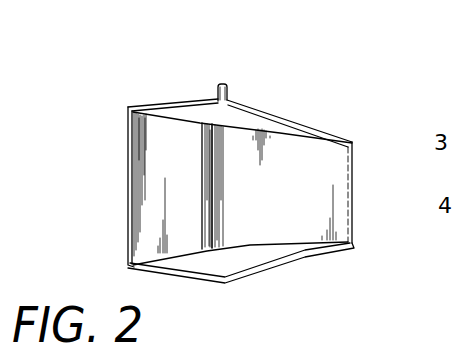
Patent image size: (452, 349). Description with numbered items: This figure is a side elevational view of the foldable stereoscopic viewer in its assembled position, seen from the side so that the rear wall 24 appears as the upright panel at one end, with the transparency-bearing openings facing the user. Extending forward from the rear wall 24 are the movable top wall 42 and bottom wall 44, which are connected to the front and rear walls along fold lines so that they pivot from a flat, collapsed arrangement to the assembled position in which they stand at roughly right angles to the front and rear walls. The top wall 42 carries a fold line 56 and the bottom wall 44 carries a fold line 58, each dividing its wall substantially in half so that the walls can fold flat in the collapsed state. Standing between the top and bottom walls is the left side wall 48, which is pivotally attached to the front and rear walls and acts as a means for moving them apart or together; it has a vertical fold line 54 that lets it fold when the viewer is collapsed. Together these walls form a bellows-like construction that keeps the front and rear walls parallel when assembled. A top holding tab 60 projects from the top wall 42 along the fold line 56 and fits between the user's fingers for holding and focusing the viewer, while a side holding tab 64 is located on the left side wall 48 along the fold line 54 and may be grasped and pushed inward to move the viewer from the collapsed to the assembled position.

The rear wall 24 is at (128, 165).
The top wall 42 is at (300, 123).
The bottom wall 44 is at (283, 265).
The left side wall 48 is at (322, 177).
The vertical fold line 54 is at (212, 204).
The fold line 56 is at (229, 100).
The fold line 58 is at (223, 281).
The top holding tab 60 is at (223, 84).
The side holding tab 64 is at (203, 173).